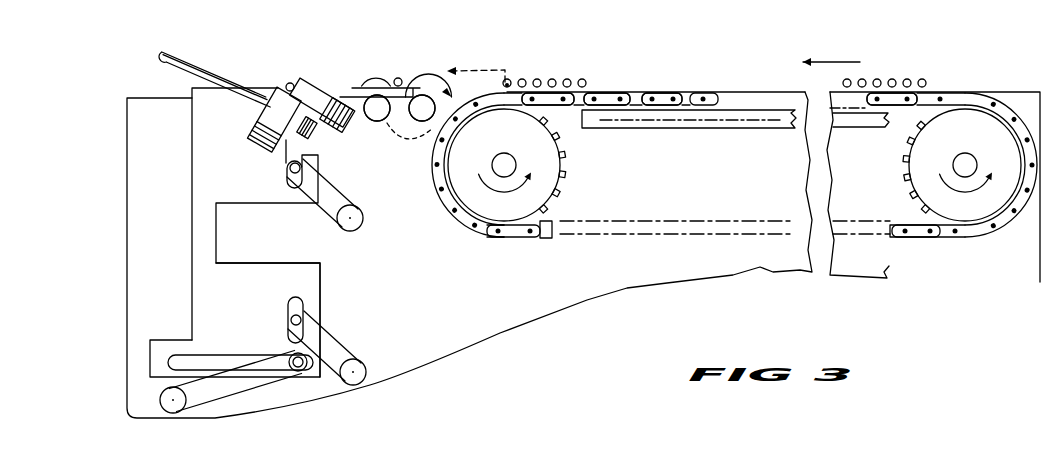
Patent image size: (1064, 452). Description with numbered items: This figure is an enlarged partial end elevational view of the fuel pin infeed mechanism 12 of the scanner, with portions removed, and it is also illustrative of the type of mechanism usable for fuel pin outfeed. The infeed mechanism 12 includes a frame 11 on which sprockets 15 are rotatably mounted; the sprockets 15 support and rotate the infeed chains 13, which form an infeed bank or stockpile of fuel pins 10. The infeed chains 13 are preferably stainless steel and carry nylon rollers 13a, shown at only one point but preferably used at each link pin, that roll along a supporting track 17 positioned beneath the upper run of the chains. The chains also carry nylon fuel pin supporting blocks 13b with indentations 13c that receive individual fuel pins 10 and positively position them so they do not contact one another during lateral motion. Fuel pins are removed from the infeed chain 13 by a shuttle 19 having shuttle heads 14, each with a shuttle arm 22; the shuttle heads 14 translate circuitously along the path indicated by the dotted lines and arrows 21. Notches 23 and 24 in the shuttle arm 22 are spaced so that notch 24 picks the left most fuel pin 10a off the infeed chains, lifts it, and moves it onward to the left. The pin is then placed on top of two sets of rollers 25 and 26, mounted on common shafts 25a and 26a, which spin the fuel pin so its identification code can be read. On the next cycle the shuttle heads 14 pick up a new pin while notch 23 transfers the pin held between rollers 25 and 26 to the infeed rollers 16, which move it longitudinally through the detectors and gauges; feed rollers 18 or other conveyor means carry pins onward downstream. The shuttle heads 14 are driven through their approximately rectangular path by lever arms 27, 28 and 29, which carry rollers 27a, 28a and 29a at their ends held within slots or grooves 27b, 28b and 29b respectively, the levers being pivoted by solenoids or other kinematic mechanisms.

The fuel pins 10 is at (879, 80).
The left most fuel pin 10a is at (508, 84).
The frame 11 is at (138, 138).
The fuel pin infeed mechanism 12 is at (972, 80).
The infeed chains 13 is at (918, 232).
The nylon rollers 13a is at (660, 87).
The fuel pin supporting blocks 13b is at (597, 85).
The indentations 13c is at (555, 78).
The shuttle heads 14 is at (198, 193).
The sprockets 15 is at (545, 183).
The infeed rollers 16 is at (328, 116).
The supporting track 17 is at (742, 120).
The feed rollers 18 is at (925, 82).
The shuttle 19 is at (325, 297).
The dotted lines and arrows 21 is at (467, 70).
The shuttle arm 22 is at (337, 83).
The notch 23 is at (286, 87).
The notch 24 is at (407, 84).
The rollers 25 is at (393, 145).
The common shaft 25a is at (378, 121).
The rollers 26 is at (428, 110).
The common shaft 26a is at (428, 128).
The lever arm 27 is at (358, 224).
The roller 27a is at (290, 166).
The slot 27b is at (293, 188).
The lever arm 28 is at (332, 355).
The roller 28a is at (290, 318).
The slot 28b is at (303, 305).
The lever arm 29 is at (217, 387).
The roller 29a is at (298, 371).
The slot 29b is at (217, 365).